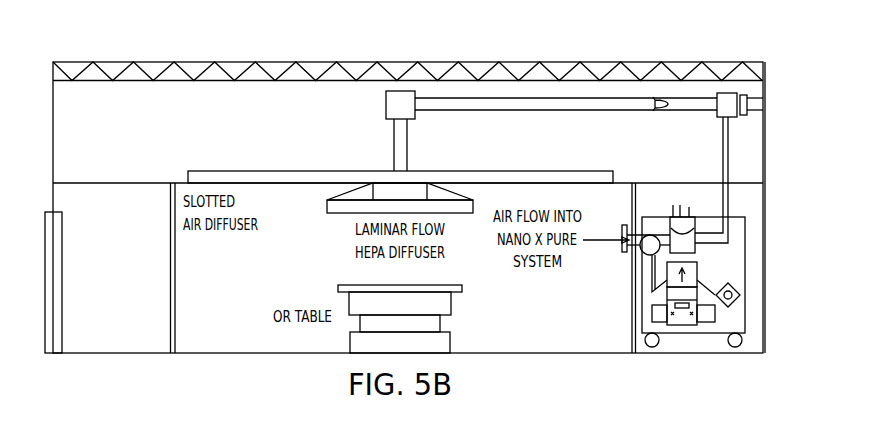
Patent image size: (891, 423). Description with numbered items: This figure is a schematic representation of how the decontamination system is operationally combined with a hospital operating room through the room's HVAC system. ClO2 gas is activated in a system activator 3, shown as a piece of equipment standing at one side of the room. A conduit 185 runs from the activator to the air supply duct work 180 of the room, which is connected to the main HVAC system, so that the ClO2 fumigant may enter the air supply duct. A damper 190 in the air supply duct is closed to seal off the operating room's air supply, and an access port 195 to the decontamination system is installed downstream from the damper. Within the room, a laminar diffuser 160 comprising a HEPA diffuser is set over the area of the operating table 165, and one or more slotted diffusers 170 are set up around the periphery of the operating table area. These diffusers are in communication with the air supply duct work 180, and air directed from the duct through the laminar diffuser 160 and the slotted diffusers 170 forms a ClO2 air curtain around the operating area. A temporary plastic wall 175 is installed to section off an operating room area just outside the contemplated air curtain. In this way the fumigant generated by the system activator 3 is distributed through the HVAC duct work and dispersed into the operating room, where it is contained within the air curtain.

The slotted diffuser 170 is at (212, 170).
The air supply duct work 180 is at (497, 98).
The access port 195 is at (728, 93).
The damper 190 is at (743, 93).
The conduit 185 is at (732, 143).
The laminar diffuser 160 is at (327, 212).
The temporary plastic wall 175 is at (173, 312).
The operating table 165 is at (462, 285).
The system activator 3 is at (688, 248).